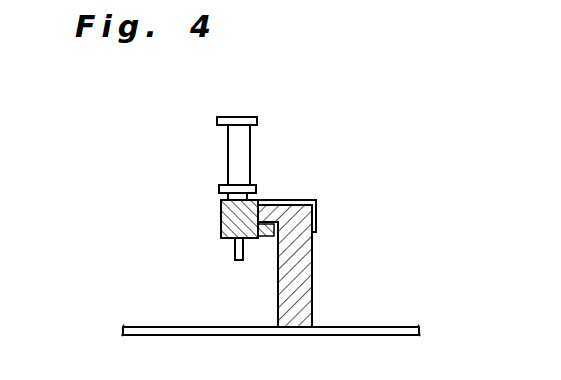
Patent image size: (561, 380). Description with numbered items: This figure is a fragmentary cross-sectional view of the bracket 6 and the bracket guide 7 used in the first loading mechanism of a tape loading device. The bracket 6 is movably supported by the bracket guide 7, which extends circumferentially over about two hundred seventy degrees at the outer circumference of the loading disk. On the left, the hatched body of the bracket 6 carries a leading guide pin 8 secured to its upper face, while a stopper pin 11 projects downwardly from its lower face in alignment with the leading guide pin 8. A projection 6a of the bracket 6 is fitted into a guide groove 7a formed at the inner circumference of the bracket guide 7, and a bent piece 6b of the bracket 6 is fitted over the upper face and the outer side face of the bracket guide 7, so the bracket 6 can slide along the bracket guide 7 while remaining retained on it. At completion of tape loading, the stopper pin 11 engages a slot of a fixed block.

The bracket 6 is at (222, 216).
The projection 6a is at (263, 238).
The bent piece 6b is at (317, 208).
The bracket guide 7 is at (312, 260).
The guide groove 7a is at (270, 238).
The leading guide pin 8 is at (237, 157).
The stopper pin 11 is at (233, 256).